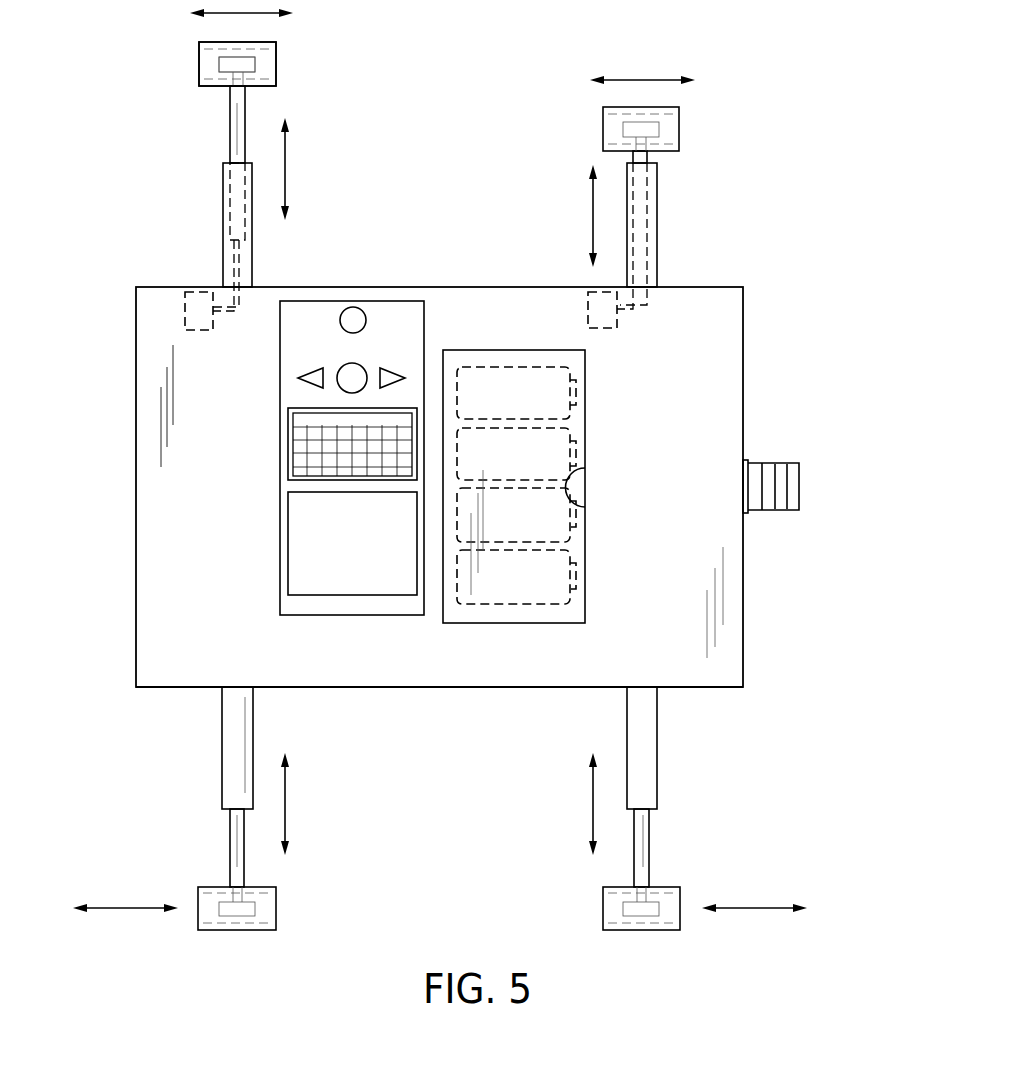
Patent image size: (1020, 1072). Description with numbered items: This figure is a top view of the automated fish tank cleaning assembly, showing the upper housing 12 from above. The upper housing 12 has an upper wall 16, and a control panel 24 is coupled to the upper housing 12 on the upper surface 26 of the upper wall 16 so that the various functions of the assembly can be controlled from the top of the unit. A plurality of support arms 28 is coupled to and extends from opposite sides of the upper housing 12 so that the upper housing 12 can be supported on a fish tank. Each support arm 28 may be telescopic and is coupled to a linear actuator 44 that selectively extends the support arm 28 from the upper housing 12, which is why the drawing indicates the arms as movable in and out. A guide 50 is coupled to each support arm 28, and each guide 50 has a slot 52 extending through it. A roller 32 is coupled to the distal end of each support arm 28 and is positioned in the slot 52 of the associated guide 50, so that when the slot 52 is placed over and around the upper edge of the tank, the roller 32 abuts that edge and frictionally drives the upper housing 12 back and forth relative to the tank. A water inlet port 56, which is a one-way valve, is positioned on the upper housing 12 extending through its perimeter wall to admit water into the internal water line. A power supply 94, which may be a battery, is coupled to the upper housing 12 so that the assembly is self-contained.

The upper housing 12 is at (743, 347).
The upper wall 16 is at (403, 668).
The control panel 24 is at (418, 300).
The upper surface 26 is at (235, 543).
The support arms 28 is at (222, 173).
The rollers 32 is at (252, 62).
The linear actuator 44 is at (198, 290).
The guides 50 is at (202, 80).
The slot 52 is at (185, 62).
The water inlet port 56 is at (792, 485).
The power supply 94 is at (516, 346).